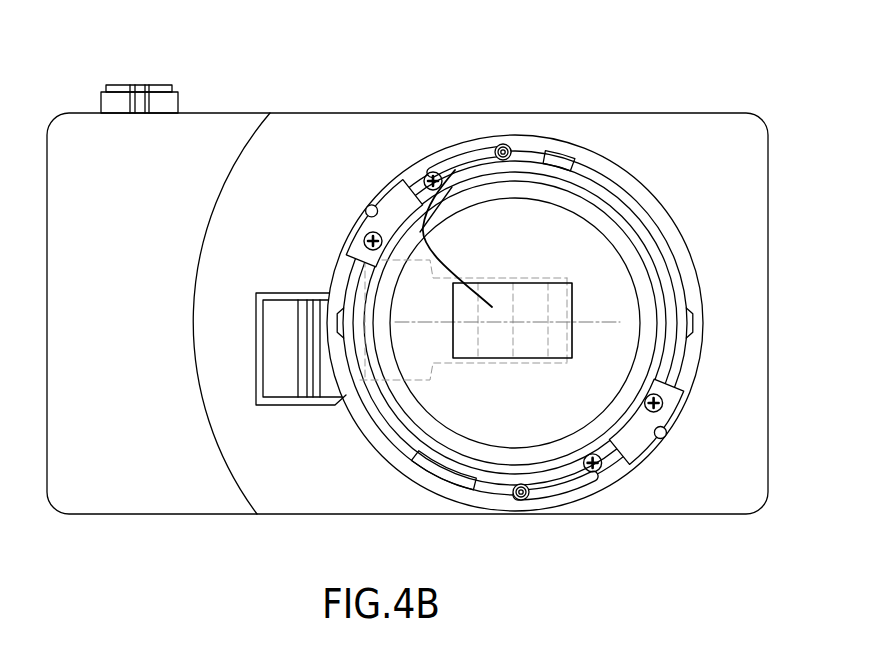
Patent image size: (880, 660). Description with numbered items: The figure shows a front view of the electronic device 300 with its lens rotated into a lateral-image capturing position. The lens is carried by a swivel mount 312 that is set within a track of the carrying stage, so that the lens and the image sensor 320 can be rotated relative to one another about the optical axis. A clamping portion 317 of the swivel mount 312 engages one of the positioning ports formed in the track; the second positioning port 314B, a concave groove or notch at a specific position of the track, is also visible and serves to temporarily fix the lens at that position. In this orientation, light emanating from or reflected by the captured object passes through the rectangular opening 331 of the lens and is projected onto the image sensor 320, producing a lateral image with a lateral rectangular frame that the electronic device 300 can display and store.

The electronic device 300 is at (93, 60).
The swivel mount 312 is at (628, 431).
The second positioning port 314B is at (690, 312).
The clamping portion 317 is at (522, 496).
The image sensor 320 is at (497, 150).
The rectangular opening 331 is at (522, 283).